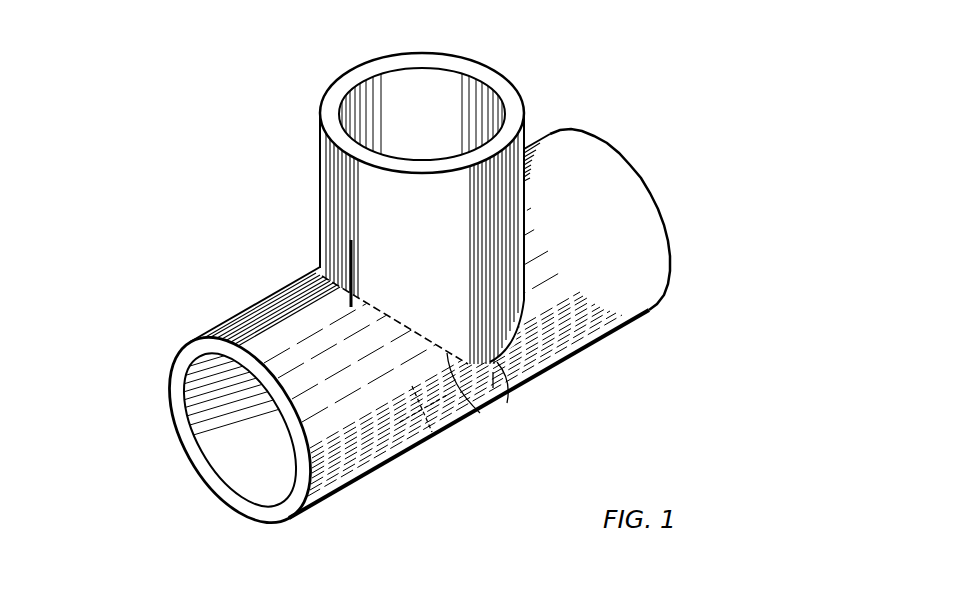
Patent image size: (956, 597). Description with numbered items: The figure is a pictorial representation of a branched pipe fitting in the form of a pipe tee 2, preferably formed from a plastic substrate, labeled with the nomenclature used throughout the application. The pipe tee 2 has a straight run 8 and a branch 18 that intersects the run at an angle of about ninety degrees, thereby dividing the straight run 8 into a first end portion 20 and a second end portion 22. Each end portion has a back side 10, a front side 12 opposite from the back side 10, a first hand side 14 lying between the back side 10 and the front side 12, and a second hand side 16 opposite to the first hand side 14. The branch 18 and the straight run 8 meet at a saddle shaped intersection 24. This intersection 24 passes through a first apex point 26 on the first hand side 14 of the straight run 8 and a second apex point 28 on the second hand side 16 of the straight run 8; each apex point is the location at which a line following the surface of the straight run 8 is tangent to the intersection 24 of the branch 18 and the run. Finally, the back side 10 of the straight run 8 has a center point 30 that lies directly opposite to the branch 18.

The pipe tee 2 is at (402, 300).
The straight run 8 is at (402, 323).
The back side 10 is at (242, 517).
The front side 12 is at (637, 116).
The first hand side 14 is at (173, 378).
The second hand side 16 is at (325, 468).
The branch 18 is at (424, 100).
The first end portion 20 is at (224, 308).
The second end portion 22 is at (547, 125).
The saddle shaped intersection 24 is at (480, 412).
The first apex point 26 is at (318, 258).
The second apex point 28 is at (493, 372).
The center point 30 is at (425, 418).